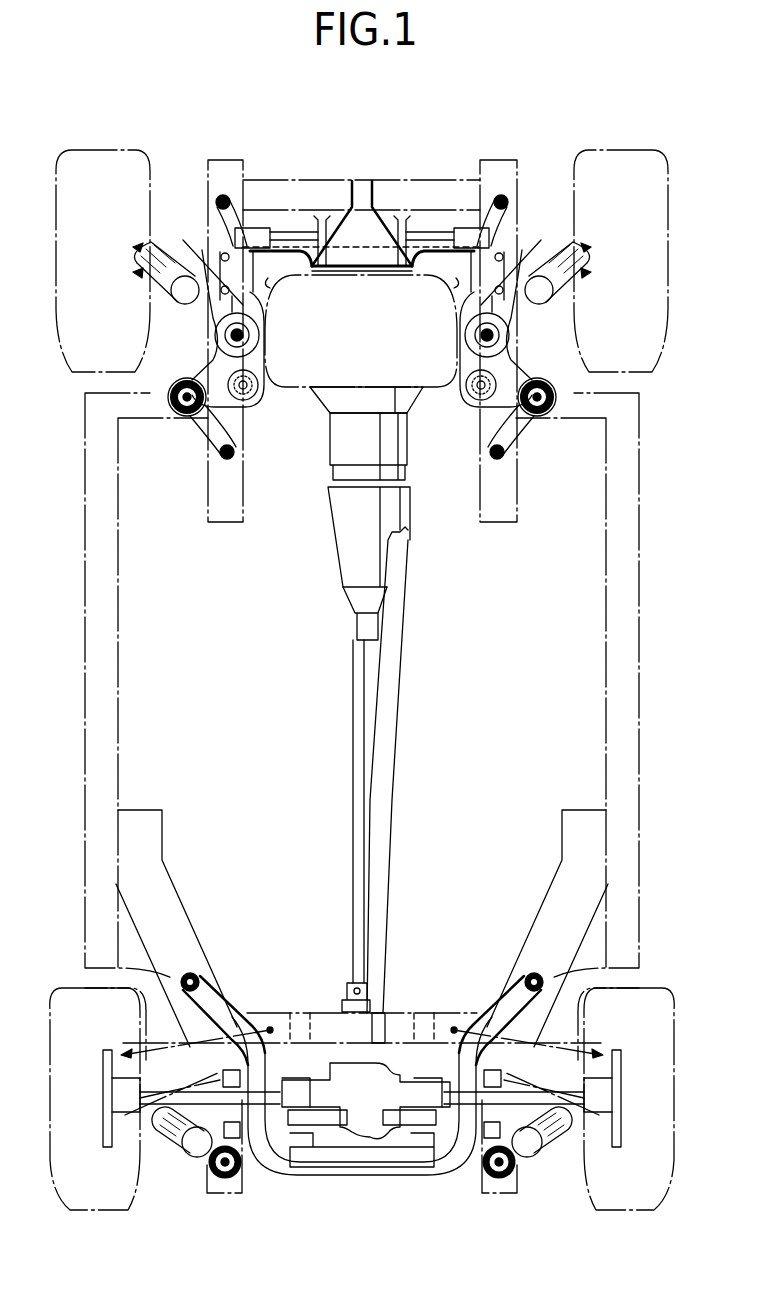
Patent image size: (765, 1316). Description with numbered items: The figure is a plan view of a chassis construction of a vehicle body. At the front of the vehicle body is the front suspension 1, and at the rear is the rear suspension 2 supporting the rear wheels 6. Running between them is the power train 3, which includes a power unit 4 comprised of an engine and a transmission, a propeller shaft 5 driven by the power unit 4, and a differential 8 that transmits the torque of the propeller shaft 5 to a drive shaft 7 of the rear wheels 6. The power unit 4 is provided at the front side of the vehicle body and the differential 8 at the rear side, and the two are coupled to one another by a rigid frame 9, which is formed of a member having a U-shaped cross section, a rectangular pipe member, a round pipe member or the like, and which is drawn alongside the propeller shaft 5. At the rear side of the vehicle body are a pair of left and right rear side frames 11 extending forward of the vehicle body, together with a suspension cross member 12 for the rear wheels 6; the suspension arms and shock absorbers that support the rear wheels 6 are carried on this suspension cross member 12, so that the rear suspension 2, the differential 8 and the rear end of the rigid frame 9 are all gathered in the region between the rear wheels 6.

The front suspension 1 is at (526, 200).
The rear suspension 2 is at (180, 1165).
The power train 3 is at (324, 561).
The power unit 4 is at (325, 445).
The propeller shaft 5 is at (365, 725).
The rear wheels 6 is at (128, 1212).
The drive shaft 7 is at (247, 1165).
The differential 8 is at (353, 1073).
The rigid frame 9 is at (385, 772).
The rear side frames 11 is at (185, 899).
The suspension cross member 12 is at (240, 1005).